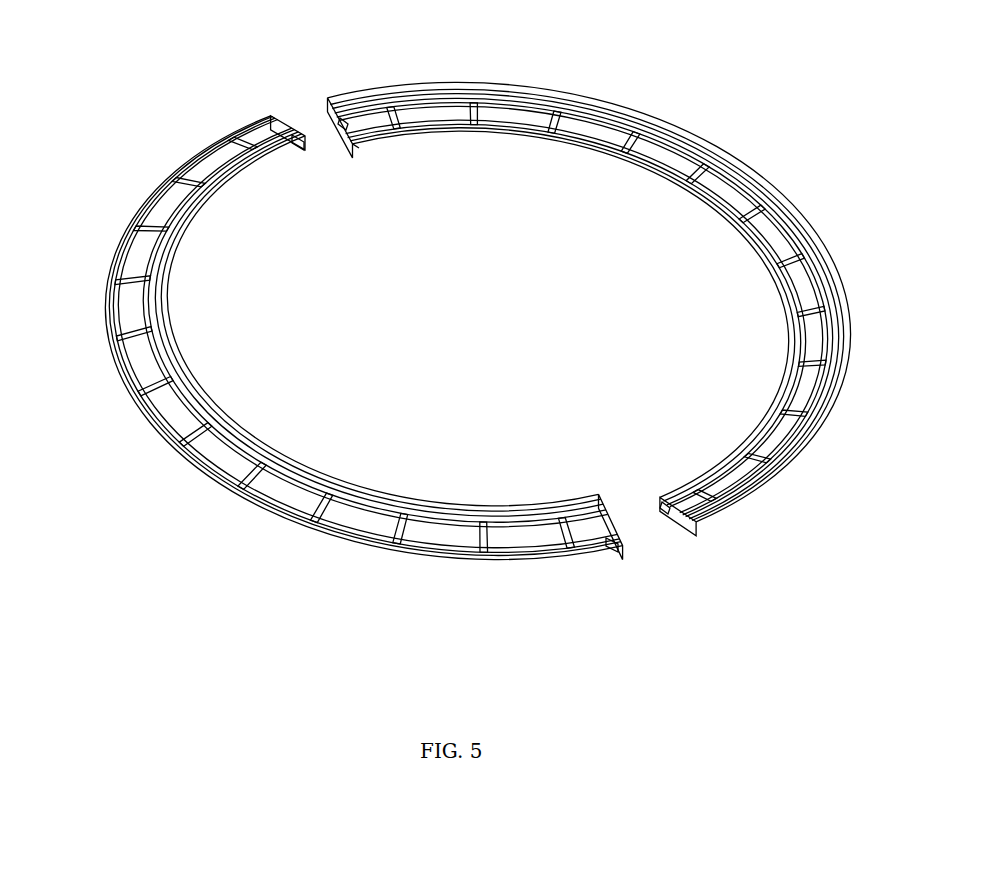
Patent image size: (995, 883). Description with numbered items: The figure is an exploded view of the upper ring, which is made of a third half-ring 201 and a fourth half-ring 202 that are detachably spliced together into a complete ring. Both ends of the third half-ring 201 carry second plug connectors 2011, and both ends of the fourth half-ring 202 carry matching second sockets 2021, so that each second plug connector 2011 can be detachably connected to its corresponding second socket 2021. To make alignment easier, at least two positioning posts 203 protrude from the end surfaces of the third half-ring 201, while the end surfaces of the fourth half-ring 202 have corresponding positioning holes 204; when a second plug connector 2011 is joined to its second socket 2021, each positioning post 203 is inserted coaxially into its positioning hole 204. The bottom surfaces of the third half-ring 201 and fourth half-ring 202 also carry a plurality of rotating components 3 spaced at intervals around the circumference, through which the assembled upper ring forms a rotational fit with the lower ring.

The third half-ring 201 is at (425, 85).
The fourth half-ring 202 is at (170, 178).
The positioning post 203 is at (330, 108).
The positioning hole 204 is at (285, 138).
The second plug connector 2011 is at (343, 126).
The second socket 2021 is at (294, 148).
The rotating component 3 is at (475, 120).